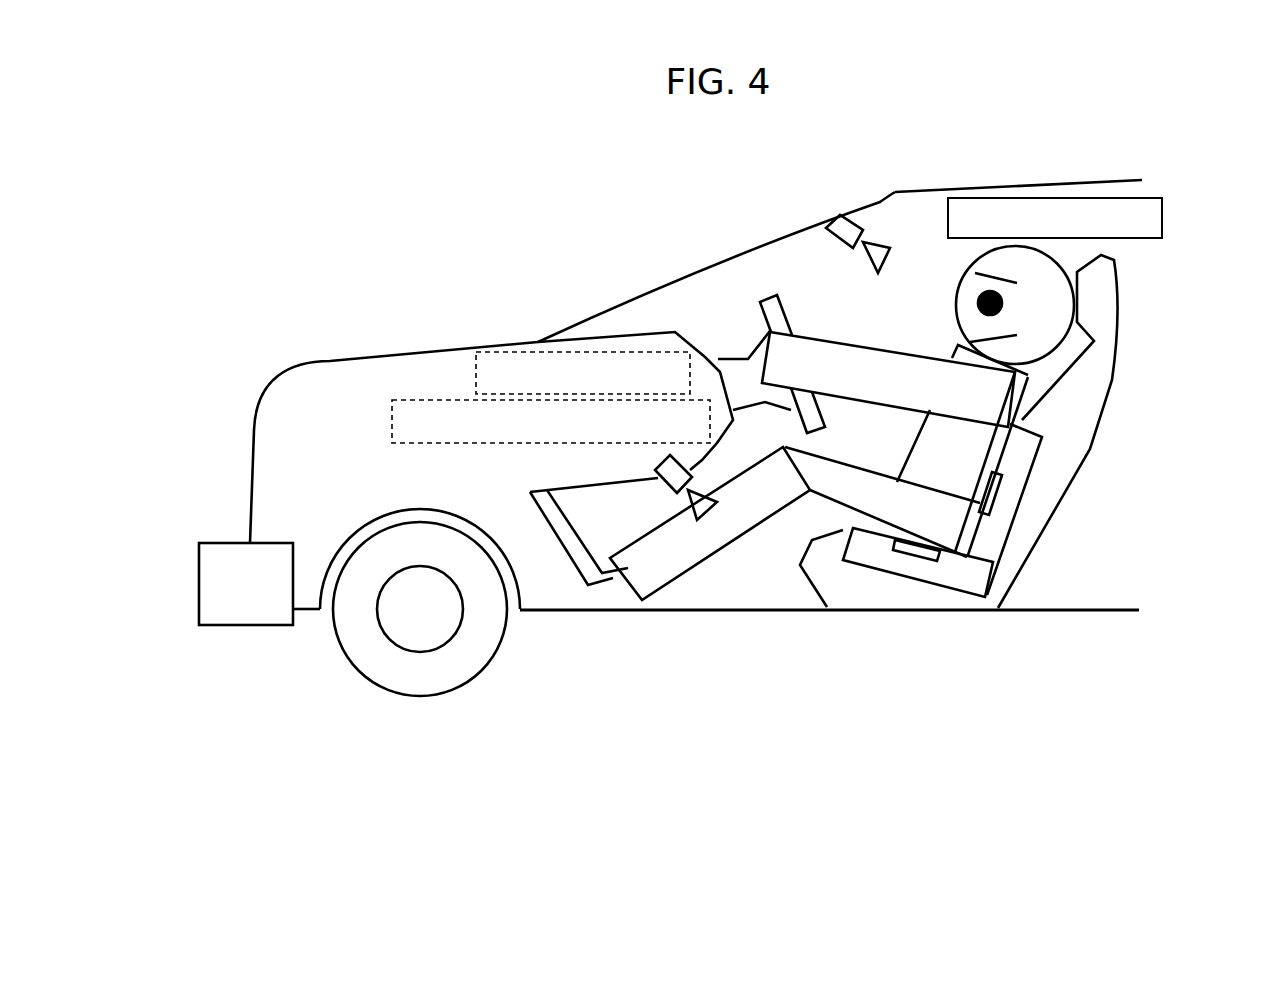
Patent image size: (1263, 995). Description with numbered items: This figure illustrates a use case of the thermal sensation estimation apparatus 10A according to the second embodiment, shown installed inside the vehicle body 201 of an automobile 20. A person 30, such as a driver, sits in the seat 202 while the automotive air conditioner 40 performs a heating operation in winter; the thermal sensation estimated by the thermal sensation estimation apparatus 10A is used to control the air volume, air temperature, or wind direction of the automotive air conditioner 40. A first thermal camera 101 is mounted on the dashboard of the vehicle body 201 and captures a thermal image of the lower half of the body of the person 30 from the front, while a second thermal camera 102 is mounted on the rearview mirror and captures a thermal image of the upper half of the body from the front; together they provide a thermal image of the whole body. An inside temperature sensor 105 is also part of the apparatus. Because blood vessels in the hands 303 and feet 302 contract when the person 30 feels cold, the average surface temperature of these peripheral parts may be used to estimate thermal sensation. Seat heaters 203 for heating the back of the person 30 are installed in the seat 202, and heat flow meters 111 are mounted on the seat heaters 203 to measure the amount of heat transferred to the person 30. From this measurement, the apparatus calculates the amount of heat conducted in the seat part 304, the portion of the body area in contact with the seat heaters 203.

The automobile 20 is at (1113, 180).
The vehicle body 201 is at (928, 210).
The seat 202 is at (1083, 400).
The seat heaters 203 is at (1012, 485).
The person 30 is at (1058, 263).
The feet 302 is at (655, 572).
The hands 303 is at (800, 348).
The seat part 304 is at (973, 455).
The automotive air conditioner 40 is at (475, 362).
The thermal sensation estimation apparatus 10A is at (392, 410).
The first thermal camera 101 is at (658, 470).
The second thermal camera 102 is at (853, 222).
The inside temperature sensor 105 is at (1162, 210).
The heat flow meters 111 is at (1000, 492).